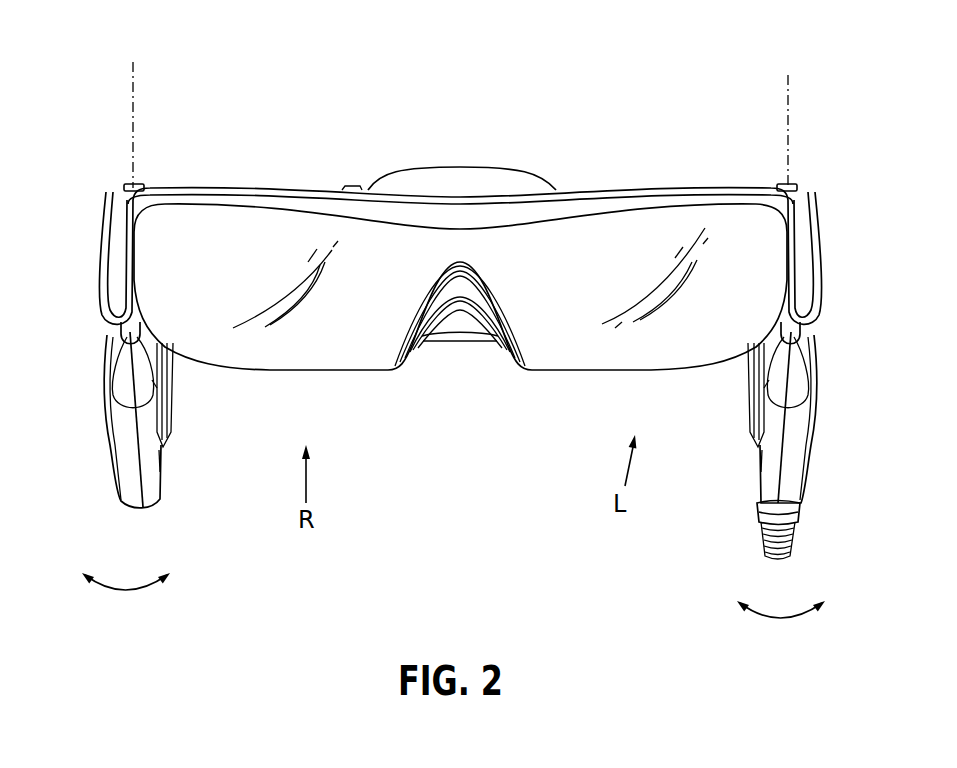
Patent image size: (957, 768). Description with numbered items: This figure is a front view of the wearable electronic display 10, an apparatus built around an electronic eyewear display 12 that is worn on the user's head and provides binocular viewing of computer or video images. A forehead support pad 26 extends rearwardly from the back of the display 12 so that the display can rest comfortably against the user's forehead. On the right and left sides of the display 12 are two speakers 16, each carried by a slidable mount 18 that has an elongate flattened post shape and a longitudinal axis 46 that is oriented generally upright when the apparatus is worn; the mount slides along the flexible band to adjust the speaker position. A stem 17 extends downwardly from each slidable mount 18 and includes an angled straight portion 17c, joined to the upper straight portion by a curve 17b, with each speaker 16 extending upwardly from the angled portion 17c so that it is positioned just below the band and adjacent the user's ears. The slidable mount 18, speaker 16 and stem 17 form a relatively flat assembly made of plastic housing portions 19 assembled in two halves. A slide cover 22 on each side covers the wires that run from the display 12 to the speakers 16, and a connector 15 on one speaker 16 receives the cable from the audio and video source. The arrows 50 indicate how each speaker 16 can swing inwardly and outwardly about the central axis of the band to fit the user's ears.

The wearable electronic display 10 is at (414, 80).
The electronic eyewear display 12 is at (323, 354).
The connector 15 is at (792, 554).
The speaker 16 is at (108, 381).
The stem 17 is at (124, 478).
The curve 17b is at (138, 389).
The angled straight portion 17c is at (150, 458).
The slidable mount 18 is at (128, 184).
The housing portion 19 is at (114, 444).
The slide cover 22 is at (108, 276).
The forehead support pad 26 is at (527, 168).
The longitudinal axis 46 is at (136, 132).
The arrows 50 is at (122, 592).